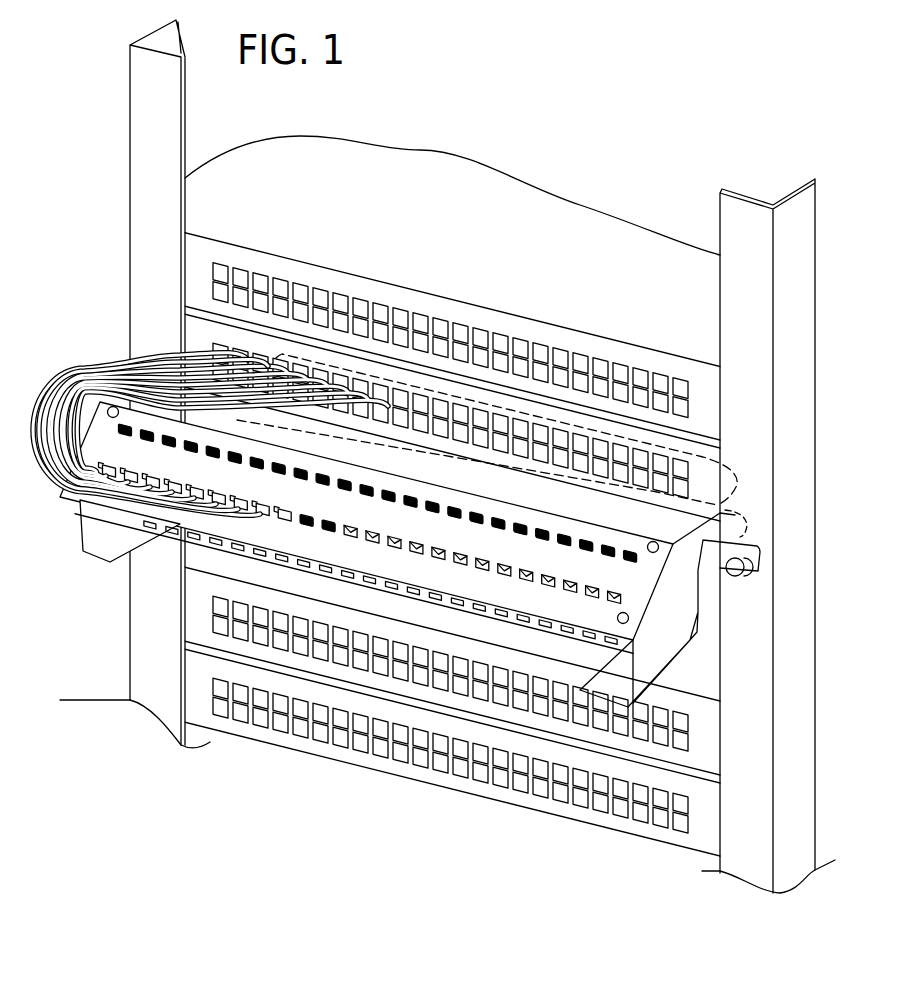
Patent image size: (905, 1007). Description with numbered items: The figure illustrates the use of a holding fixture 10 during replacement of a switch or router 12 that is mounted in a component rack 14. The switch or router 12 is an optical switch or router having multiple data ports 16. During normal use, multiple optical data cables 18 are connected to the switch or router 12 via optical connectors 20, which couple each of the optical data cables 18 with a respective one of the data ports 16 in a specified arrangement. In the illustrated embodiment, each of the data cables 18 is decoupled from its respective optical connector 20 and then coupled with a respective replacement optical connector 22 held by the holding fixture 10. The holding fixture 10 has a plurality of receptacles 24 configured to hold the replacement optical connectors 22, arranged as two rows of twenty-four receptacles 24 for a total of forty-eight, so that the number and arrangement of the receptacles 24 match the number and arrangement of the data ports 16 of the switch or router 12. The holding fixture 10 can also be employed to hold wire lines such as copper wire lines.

The holding fixture 10 is at (435, 566).
The switch or router 12 is at (457, 397).
The component rack 14 is at (795, 310).
The data ports 16 is at (590, 430).
The optical data cables 18 is at (198, 367).
The optical connectors 20 is at (257, 352).
The replacement optical connectors 22 is at (318, 526).
The receptacles 24 is at (717, 617).